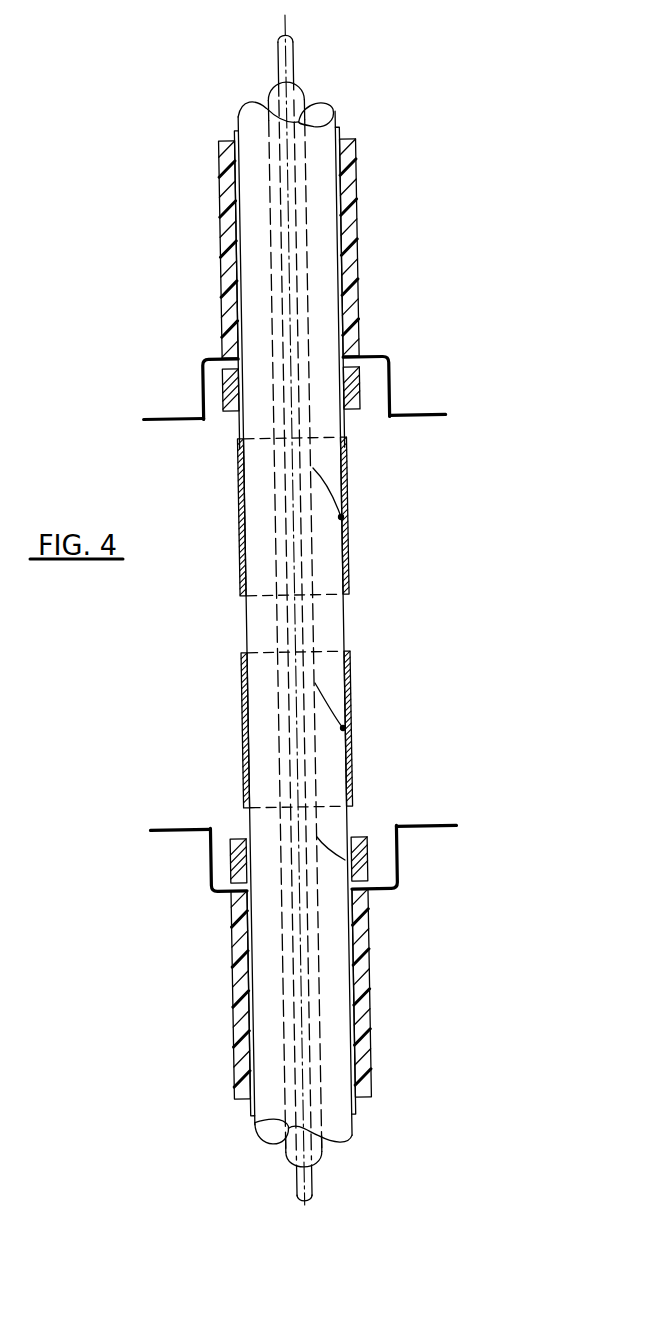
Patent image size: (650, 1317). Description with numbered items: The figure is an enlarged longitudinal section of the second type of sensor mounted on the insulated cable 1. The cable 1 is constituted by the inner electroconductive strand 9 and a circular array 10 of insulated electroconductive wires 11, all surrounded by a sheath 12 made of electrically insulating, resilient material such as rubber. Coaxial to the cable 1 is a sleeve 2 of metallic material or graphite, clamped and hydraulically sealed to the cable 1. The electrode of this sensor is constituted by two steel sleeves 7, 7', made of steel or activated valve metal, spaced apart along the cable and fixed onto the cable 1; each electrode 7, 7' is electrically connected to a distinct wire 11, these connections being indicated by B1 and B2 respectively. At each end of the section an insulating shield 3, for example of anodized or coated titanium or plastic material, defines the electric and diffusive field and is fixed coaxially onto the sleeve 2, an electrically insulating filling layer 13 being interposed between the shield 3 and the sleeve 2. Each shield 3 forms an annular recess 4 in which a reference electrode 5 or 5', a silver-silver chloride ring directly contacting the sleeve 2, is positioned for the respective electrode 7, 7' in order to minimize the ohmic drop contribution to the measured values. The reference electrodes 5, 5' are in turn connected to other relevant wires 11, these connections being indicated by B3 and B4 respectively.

The insulated cable 1 is at (360, 1123).
The sleeve 2 is at (345, 130).
The insulating shield 3 is at (418, 419).
The annular recess 4 is at (213, 381).
The reference electrode 5 is at (361, 389).
The reference electrode 5' is at (373, 873).
The steel sleeve 7 is at (370, 516).
The steel sleeve 7' is at (376, 729).
The inner electroconductive strand 9 is at (295, 58).
The circular array of insulated electroconductive wires 10 is at (293, 113).
The insulated electroconductive wire 11 is at (338, 389).
The sheath 12 is at (318, 136).
The electrically insulating filling layer 13 is at (360, 203).
The connection B1 is at (295, 558).
The connection B2 is at (297, 729).
The connection B3 is at (292, 416).
The connection B4 is at (329, 880).